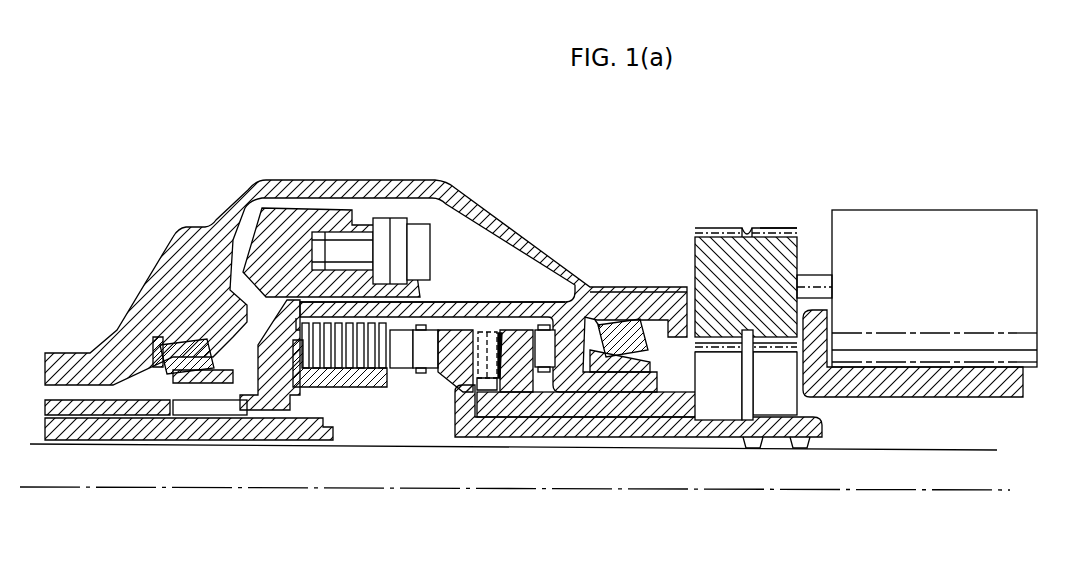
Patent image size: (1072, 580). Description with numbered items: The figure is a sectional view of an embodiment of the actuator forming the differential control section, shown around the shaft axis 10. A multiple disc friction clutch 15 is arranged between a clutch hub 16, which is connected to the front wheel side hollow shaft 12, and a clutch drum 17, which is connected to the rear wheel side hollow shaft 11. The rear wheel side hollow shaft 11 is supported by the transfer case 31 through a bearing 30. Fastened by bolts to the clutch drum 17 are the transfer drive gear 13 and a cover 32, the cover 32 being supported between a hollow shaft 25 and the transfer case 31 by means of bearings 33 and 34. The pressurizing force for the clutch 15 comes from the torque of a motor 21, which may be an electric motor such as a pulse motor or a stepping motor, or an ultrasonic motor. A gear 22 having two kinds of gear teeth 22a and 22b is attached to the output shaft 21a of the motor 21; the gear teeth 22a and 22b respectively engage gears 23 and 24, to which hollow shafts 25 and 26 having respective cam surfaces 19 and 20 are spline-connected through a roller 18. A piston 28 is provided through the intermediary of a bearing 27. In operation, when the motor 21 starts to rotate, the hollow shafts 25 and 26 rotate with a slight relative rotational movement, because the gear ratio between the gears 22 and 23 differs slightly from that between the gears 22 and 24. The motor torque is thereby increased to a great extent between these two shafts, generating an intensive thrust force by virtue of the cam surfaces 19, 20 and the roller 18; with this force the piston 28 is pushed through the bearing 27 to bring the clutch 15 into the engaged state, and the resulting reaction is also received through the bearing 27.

The shaft 10 is at (507, 477).
The rear wheel side hollow shaft 11 is at (268, 387).
The front wheel side hollow shaft 12 is at (100, 440).
The transfer drive gear 13 is at (283, 217).
The multiple disc friction clutch 15 is at (345, 352).
The clutch hub 16 is at (327, 382).
The clutch drum 17 is at (357, 220).
The roller 18 is at (487, 357).
The cam surface 19 is at (517, 343).
The cam surface 20 is at (453, 327).
The motor 21 is at (875, 217).
The output shaft 21a is at (809, 277).
The gear 22 is at (712, 247).
The gear teeth 22a is at (727, 228).
The gear teeth 22b is at (783, 228).
The gear 23 is at (718, 376).
The gear 24 is at (773, 402).
The hollow shaft 25 is at (570, 408).
The hollow shaft 26 is at (617, 425).
The bearing 27 is at (427, 353).
The piston 28 is at (400, 353).
The bearing 30 is at (143, 297).
The transfer case 31 is at (215, 226).
The cover 32 is at (547, 310).
The bearing 33 is at (593, 343).
The bearing 34 is at (640, 300).